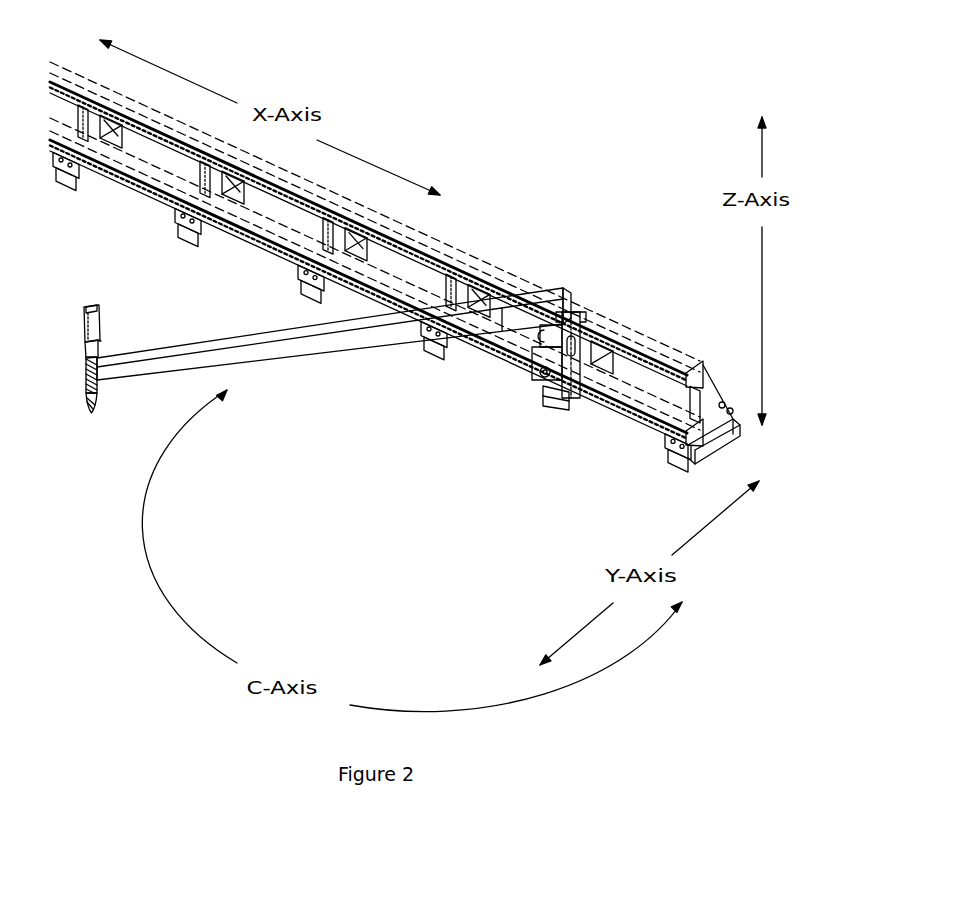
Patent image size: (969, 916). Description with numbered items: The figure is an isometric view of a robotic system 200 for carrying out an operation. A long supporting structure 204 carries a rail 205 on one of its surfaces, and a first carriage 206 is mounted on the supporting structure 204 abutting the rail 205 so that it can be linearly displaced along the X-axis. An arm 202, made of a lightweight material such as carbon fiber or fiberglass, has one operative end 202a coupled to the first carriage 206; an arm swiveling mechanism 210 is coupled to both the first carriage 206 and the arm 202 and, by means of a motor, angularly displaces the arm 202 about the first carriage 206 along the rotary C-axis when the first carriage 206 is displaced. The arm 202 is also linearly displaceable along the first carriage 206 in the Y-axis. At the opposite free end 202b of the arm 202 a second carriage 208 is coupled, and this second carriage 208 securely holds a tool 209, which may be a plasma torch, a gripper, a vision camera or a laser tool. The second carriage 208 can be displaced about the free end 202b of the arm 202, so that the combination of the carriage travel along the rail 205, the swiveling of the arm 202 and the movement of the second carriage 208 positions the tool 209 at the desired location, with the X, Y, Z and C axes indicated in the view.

The robotic system 200 is at (635, 95).
The arm 202 is at (334, 337).
The operative end of the arm 202a is at (560, 290).
The free end of the arm 202b is at (105, 350).
The supporting structure 204 is at (673, 465).
The rail 205 is at (680, 370).
The first carriage 206 is at (557, 410).
The second carriage 208 is at (105, 393).
The tool 209 is at (77, 395).
The arm swiveling mechanism 210 is at (580, 310).